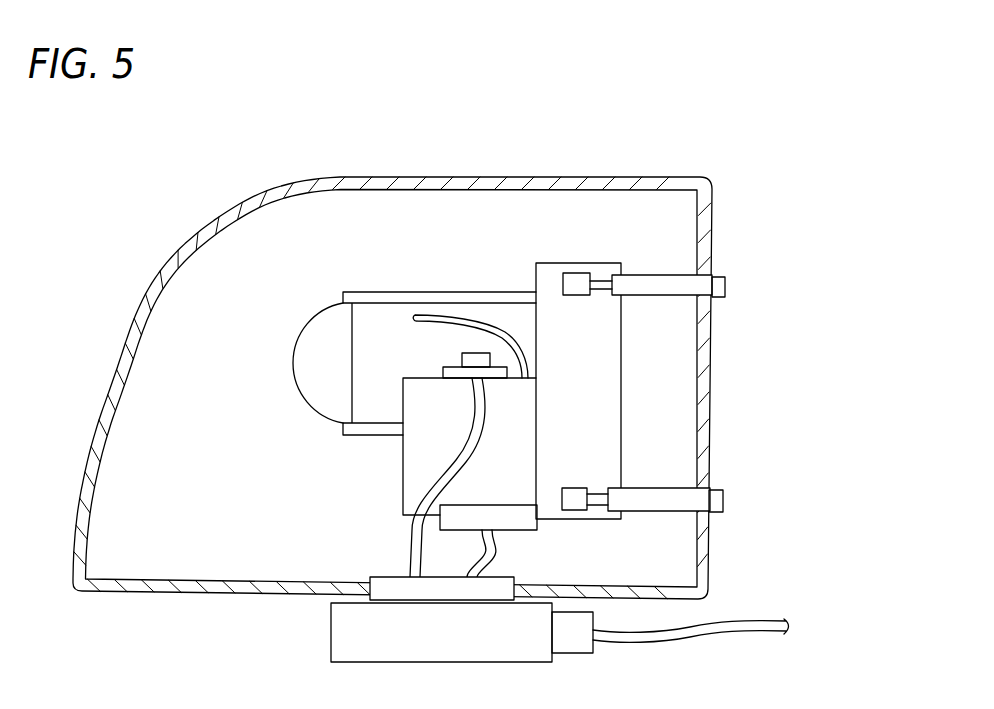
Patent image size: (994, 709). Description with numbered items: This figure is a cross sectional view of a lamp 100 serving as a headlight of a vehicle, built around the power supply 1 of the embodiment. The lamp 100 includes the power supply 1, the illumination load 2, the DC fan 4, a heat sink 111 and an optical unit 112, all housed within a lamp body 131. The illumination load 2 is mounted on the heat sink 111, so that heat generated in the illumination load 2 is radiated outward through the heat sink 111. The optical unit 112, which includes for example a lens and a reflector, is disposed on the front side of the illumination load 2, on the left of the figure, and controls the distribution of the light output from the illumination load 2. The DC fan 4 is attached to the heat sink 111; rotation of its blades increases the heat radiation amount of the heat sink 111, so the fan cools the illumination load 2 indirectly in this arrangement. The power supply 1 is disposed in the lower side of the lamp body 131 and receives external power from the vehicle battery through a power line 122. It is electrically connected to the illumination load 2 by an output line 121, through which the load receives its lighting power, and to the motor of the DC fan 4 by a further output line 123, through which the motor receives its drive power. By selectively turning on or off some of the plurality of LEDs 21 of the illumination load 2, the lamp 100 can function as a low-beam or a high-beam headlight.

The power supply 1 is at (452, 646).
The illumination load 2 is at (468, 357).
The DC fan 4 is at (511, 513).
The LEDs 21 is at (462, 361).
The lamp 100 is at (648, 182).
The heat sink 111 is at (607, 403).
The optical unit 112 is at (298, 350).
The output line 121 is at (409, 544).
The power line 122 is at (688, 634).
The output line 123 is at (489, 553).
The lamp body 131 is at (322, 182).